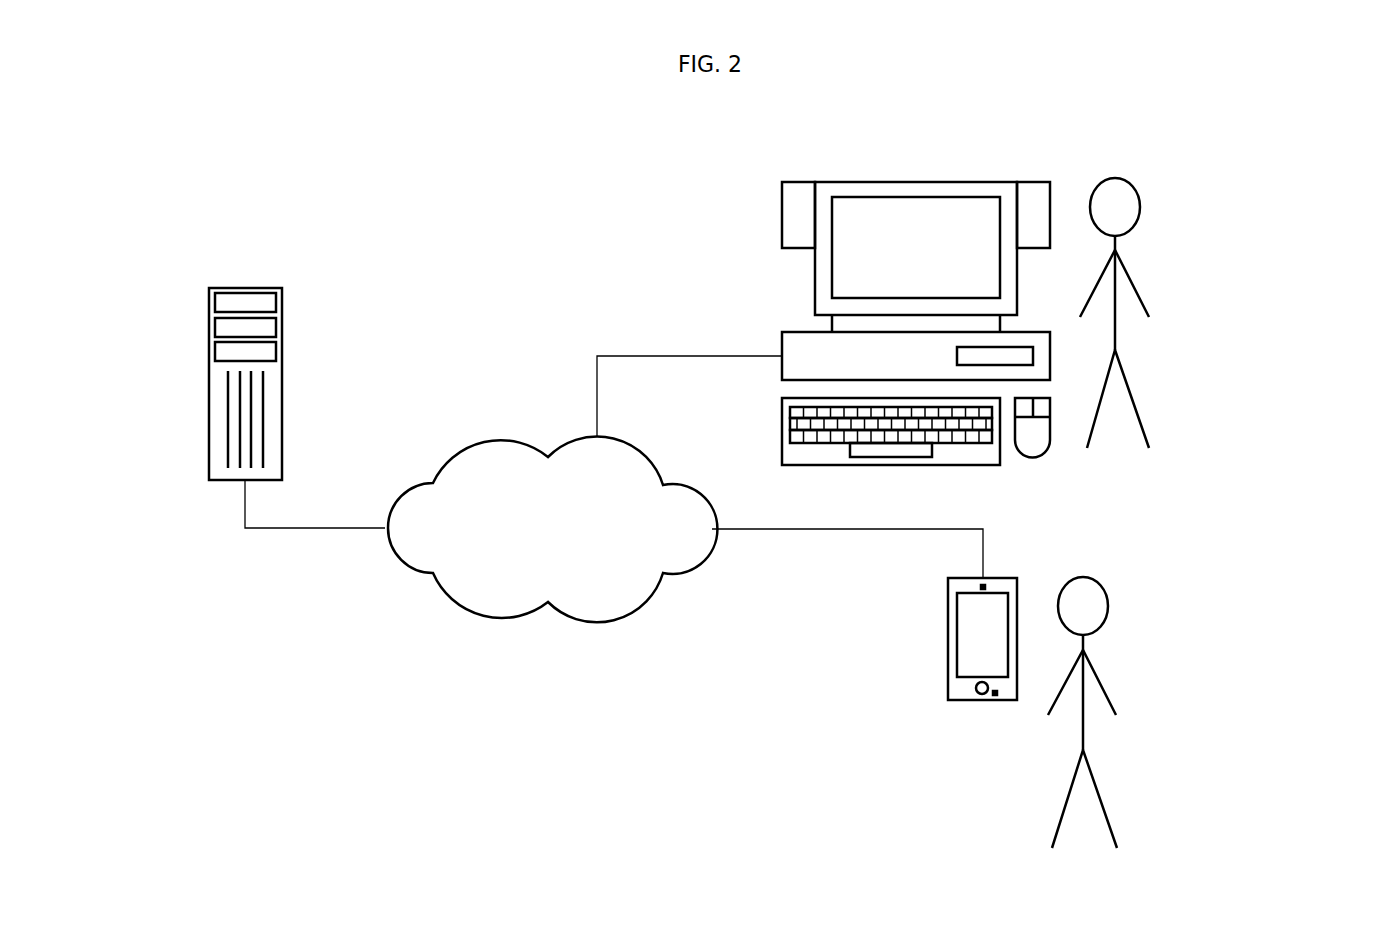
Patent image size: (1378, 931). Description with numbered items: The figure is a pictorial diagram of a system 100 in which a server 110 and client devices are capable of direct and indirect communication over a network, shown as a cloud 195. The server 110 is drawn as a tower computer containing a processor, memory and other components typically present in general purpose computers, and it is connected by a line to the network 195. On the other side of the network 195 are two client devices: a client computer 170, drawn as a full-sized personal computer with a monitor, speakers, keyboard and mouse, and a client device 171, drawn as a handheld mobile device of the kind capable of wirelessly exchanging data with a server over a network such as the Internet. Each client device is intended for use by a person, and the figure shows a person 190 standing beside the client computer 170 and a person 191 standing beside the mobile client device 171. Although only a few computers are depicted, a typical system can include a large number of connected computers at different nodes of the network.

The system 100 is at (1368, 72).
The server 110 is at (209, 300).
The network 195 is at (498, 437).
The client computer 170 is at (815, 283).
The mobile device 171 is at (947, 602).
The person 190 is at (1142, 264).
The person 191 is at (1108, 648).